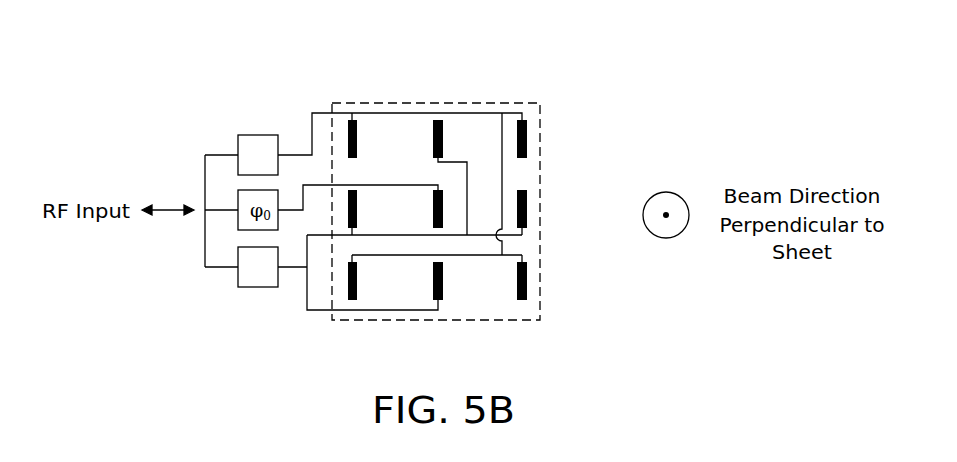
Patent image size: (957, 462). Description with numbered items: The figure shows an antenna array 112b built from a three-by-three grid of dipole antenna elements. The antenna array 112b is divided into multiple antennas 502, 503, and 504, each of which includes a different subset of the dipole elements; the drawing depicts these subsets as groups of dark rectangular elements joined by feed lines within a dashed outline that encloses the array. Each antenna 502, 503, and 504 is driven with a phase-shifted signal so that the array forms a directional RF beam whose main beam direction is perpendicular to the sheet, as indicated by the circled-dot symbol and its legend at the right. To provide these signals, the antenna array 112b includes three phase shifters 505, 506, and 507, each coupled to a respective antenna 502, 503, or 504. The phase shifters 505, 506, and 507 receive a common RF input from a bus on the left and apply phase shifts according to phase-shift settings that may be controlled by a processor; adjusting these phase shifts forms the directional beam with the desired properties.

The antenna array 112b is at (170, 53).
The antenna 502 is at (478, 103).
The antenna 503 is at (402, 185).
The antenna 504 is at (318, 310).
The phase shifter 505 is at (258, 135).
The phase shifter 506 is at (238, 198).
The phase shifter 507 is at (258, 287).